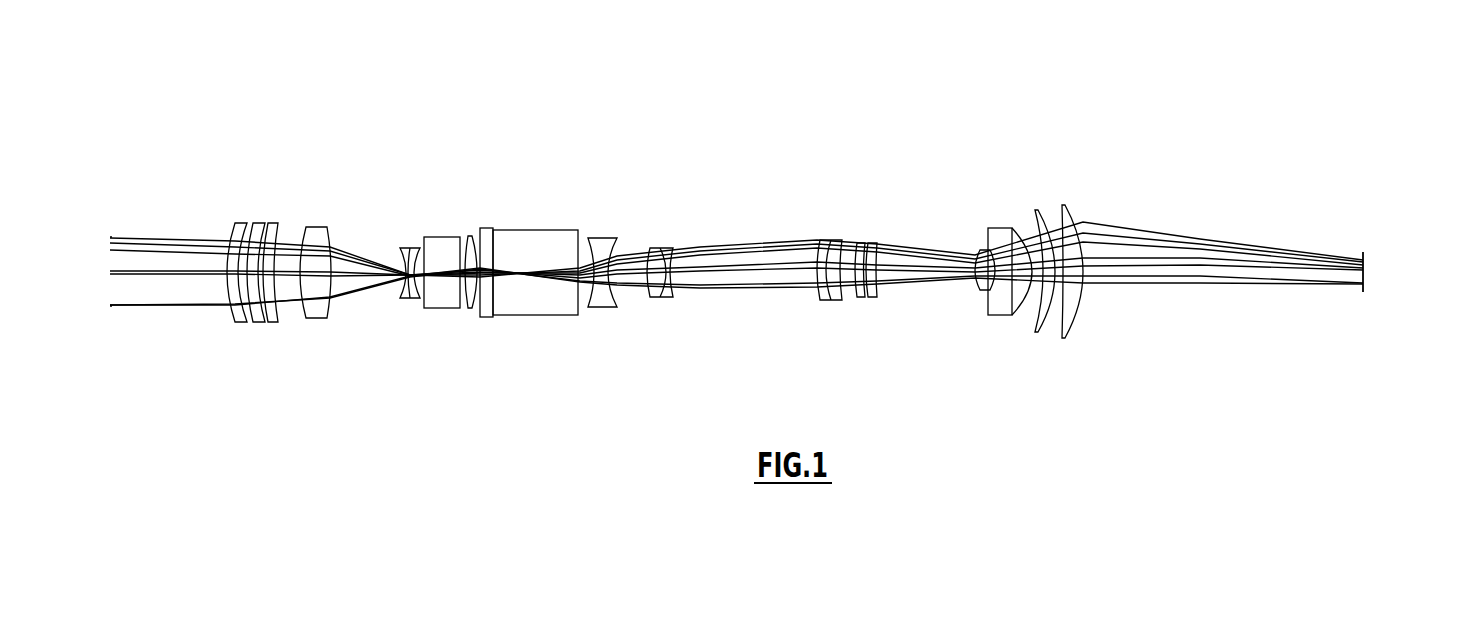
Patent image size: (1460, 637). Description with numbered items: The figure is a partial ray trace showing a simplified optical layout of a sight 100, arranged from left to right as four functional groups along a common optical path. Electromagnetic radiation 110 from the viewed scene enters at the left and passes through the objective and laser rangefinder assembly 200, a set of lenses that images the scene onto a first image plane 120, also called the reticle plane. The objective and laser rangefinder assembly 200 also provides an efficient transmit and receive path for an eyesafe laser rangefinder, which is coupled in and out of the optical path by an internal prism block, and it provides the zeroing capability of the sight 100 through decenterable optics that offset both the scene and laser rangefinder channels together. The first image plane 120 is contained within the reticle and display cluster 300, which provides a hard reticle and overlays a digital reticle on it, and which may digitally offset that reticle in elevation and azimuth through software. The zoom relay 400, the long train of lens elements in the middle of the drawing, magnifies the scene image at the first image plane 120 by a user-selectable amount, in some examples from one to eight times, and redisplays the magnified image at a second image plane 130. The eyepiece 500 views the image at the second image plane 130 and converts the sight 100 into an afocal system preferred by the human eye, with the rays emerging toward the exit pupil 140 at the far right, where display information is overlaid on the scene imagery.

The sight 100 is at (380, 118).
The electromagnetic radiation 110 is at (160, 222).
The first image plane 120 is at (507, 333).
The second image plane 130 is at (968, 234).
The exit pupil 140 is at (1376, 254).
The objective and laser rangefinder assembly 200 is at (468, 347).
The reticle and display cluster 300 is at (578, 213).
The zoom relay 400 is at (953, 333).
The eyepiece 500 is at (1083, 347).